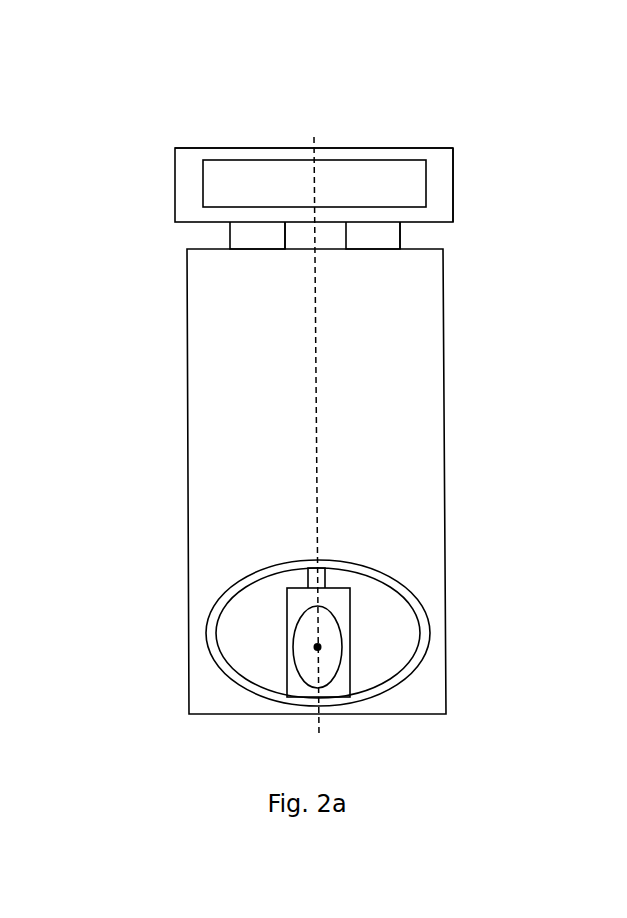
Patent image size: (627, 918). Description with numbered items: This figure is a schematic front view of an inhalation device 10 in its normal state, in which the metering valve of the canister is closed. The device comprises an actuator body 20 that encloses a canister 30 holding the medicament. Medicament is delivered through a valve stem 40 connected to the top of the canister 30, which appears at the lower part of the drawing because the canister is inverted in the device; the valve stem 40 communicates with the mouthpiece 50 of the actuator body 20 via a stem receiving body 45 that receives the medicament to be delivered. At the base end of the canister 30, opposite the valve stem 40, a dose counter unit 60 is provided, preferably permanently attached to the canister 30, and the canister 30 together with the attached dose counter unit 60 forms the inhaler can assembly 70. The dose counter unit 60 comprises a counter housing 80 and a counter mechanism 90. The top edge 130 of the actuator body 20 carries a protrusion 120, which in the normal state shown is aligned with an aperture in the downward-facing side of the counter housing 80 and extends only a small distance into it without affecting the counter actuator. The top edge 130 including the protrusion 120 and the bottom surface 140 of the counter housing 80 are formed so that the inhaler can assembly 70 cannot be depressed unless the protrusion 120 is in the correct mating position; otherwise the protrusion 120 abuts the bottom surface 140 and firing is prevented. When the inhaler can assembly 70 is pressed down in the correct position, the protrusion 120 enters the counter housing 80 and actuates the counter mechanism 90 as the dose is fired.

The inhalation device 10 is at (82, 98).
The actuator body 20 is at (503, 689).
The canister 30 is at (390, 232).
The valve stem 40 is at (322, 573).
The stem receiving body 45 is at (343, 653).
The mouthpiece 50 is at (215, 656).
The dose counter unit 60 is at (232, 147).
The inhaler can assembly 70 is at (468, 122).
The counter housing 80 is at (453, 177).
The counter mechanism 90 is at (272, 168).
The protrusion 120 is at (286, 238).
The top edge 130 is at (430, 247).
The bottom surface 140 is at (200, 222).